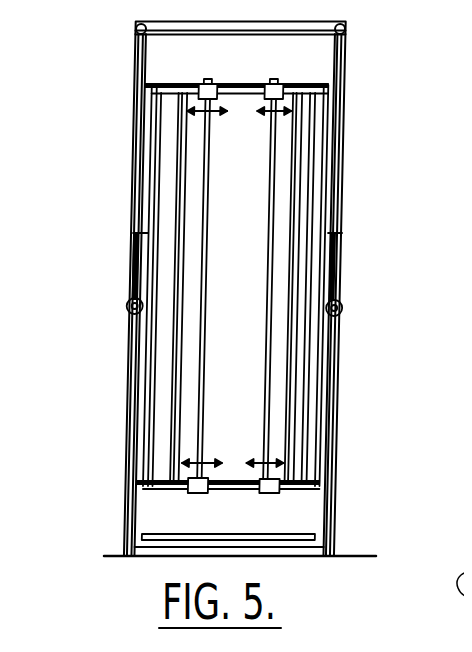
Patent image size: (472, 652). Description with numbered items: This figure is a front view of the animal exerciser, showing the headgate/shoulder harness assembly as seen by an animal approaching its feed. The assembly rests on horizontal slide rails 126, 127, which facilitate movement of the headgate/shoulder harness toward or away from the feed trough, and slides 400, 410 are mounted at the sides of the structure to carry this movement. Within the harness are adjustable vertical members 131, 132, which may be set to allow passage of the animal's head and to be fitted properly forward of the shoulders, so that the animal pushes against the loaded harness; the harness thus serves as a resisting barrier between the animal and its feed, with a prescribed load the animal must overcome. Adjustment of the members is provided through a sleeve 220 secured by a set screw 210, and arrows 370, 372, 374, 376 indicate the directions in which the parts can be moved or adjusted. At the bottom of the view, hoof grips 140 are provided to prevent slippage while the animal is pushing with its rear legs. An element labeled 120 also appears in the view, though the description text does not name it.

The frame 120 is at (126, 40).
The horizontal slide rail 126 is at (335, 298).
The horizontal slide rail 127 is at (120, 305).
The adjustable vertical member 131 is at (260, 288).
The adjustable vertical member 132 is at (199, 323).
The hoof grips 140 is at (125, 535).
The set screw 210 is at (275, 485).
The sleeve 220 is at (183, 480).
The arrow 370 is at (254, 106).
The arrow 372 is at (250, 445).
The arrow 374 is at (218, 99).
The arrow 376 is at (225, 481).
The slide 400 is at (333, 237).
The slide 410 is at (123, 242).